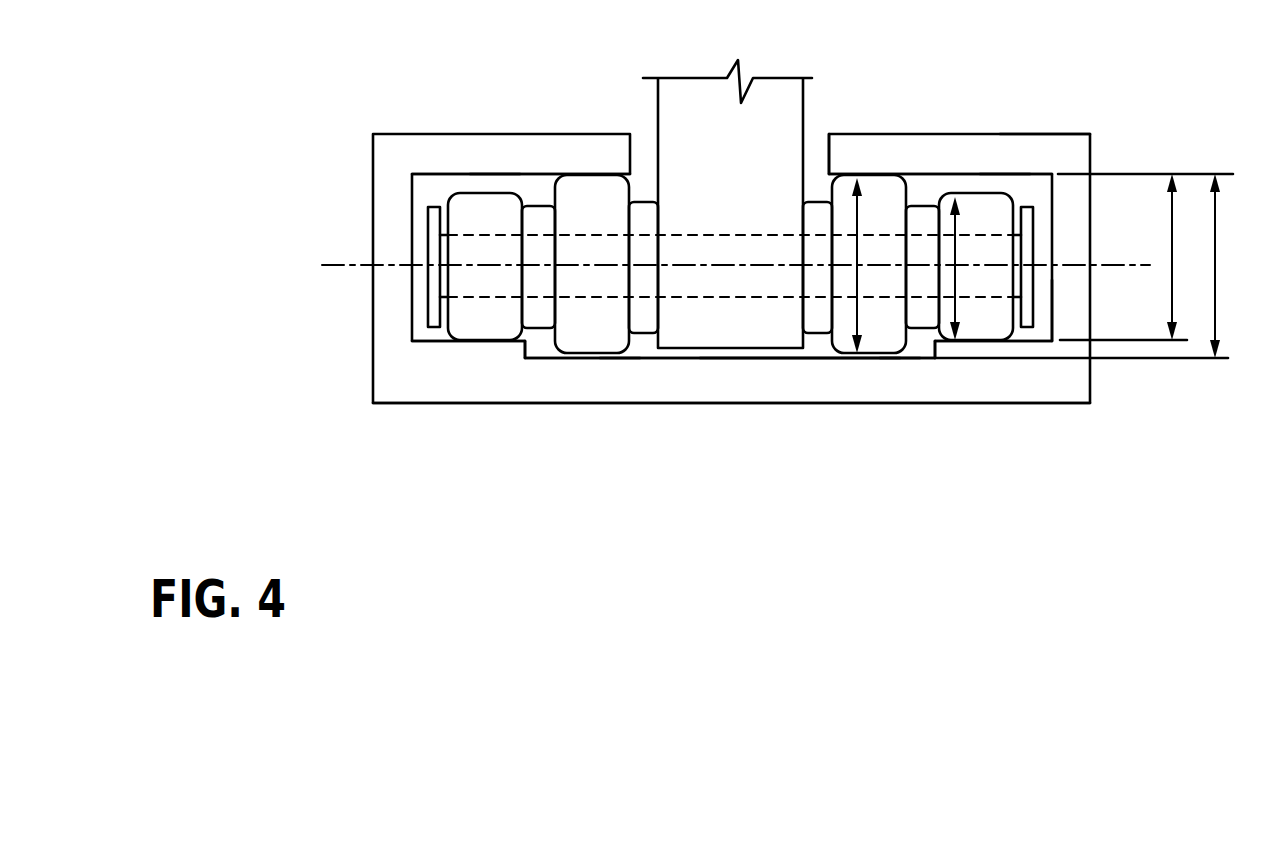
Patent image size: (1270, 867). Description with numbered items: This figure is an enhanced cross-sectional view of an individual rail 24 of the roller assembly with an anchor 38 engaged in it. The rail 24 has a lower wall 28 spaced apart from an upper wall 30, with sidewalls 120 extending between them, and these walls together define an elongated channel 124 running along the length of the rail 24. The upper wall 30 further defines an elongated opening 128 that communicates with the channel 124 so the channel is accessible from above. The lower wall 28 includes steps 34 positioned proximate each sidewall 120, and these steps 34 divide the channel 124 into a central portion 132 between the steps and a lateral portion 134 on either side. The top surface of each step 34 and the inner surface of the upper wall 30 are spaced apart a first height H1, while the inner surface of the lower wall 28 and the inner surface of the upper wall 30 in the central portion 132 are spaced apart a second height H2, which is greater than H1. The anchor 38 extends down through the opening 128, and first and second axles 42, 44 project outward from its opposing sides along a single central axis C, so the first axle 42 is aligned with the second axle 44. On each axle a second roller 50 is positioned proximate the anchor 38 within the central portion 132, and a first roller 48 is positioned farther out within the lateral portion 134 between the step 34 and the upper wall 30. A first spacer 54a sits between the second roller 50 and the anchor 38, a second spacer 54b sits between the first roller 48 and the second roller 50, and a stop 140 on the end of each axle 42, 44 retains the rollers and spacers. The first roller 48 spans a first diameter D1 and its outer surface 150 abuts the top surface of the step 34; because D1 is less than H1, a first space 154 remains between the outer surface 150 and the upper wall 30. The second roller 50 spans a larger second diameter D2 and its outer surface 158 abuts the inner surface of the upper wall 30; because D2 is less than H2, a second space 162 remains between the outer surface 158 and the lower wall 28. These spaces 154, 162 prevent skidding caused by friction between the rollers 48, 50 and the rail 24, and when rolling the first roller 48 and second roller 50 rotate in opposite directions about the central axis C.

The sidewall 120 is at (392, 228).
The lateral portion 134 is at (424, 185).
The lower wall 28 is at (700, 385).
The step 34 is at (512, 350).
The channel 124 is at (723, 373).
The central portion 132 is at (780, 374).
The second space 162 is at (618, 378).
The first space 154 is at (495, 170).
The opening 128 is at (819, 140).
The upper wall 30 is at (1035, 155).
The rail 24 is at (1070, 320).
The anchor 38 is at (767, 115).
The outer surface 150 is at (782, 252).
The first roller 48 is at (493, 310).
The outer surface 158 is at (727, 280).
The second roller 50 is at (588, 325).
The first spacer 54a is at (537, 218).
The second spacer 54b is at (645, 212).
The stop 140 is at (428, 294).
The first axle 42 is at (477, 295).
The second axle 44 is at (973, 297).
The central axis C is at (725, 267).
The first diameter D1 is at (960, 287).
The second diameter D2 is at (855, 223).
The first height H1 is at (1173, 228).
The second height H2 is at (1215, 253).